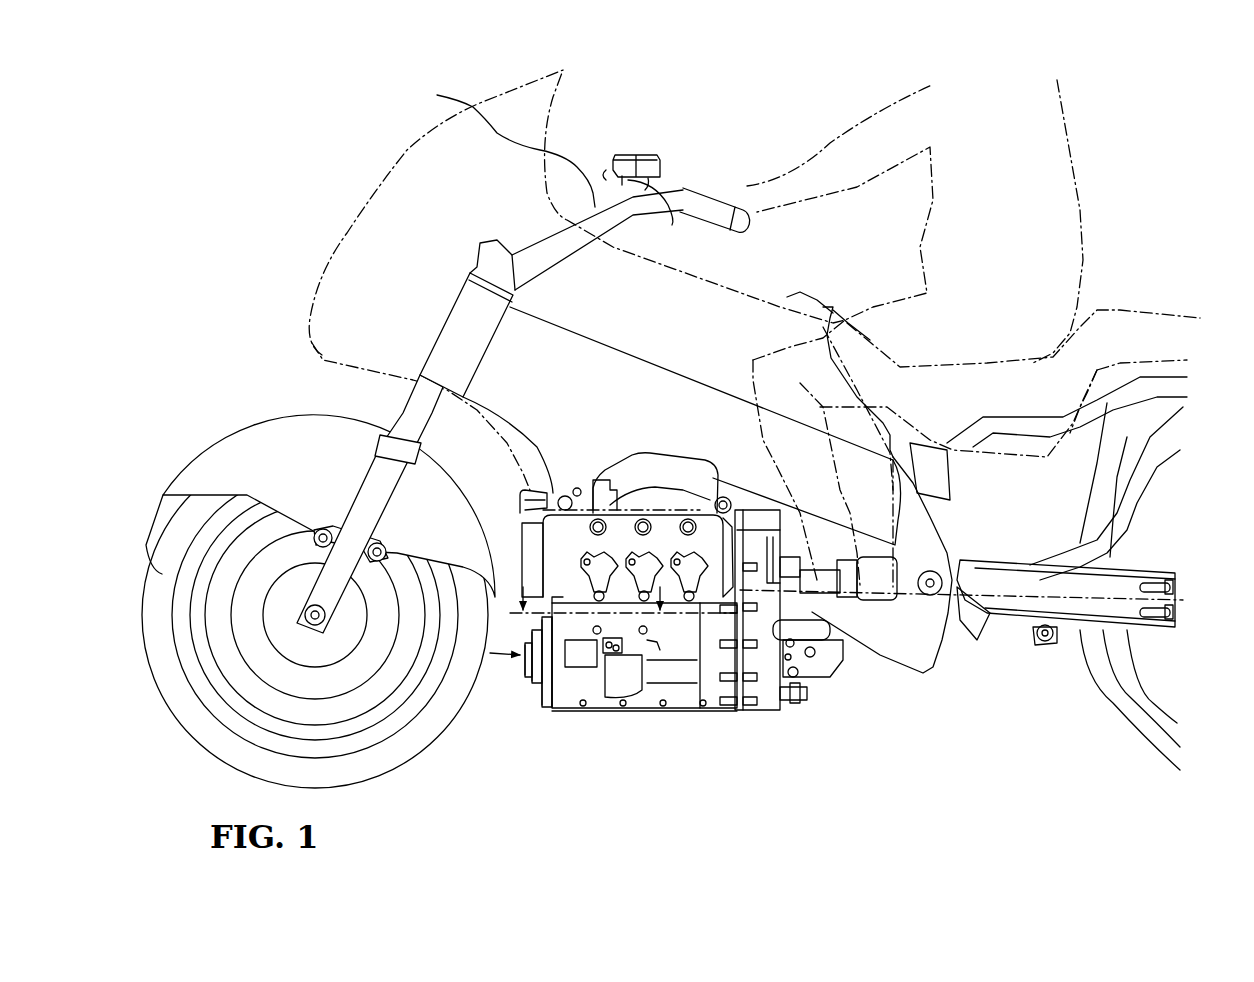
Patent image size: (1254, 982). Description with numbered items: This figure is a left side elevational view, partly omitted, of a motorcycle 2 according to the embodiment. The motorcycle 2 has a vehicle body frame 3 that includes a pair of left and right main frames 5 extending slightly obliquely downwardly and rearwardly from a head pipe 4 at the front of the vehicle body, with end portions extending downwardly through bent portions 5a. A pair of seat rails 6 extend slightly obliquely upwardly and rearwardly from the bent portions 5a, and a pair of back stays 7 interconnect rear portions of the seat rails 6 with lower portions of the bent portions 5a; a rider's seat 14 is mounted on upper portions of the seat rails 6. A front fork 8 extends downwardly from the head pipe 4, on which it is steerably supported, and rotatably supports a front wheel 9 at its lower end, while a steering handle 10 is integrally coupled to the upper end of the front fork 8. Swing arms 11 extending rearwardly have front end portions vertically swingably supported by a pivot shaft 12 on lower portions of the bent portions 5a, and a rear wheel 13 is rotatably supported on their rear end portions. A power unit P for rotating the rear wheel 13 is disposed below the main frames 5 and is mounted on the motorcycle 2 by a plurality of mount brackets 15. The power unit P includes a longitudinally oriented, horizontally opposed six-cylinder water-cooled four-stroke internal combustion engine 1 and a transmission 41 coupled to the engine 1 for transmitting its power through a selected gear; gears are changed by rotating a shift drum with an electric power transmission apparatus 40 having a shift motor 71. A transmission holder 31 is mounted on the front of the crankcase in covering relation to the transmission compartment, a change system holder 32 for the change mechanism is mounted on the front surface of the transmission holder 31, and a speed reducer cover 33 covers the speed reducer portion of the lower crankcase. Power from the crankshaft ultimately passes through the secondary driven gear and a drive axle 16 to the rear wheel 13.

The internal combustion engine 1 is at (661, 614).
The motorcycle 2 is at (300, 306).
The vehicle body frame 3 is at (455, 273).
The head pipe 4 is at (458, 332).
The main frames 5 is at (578, 380).
The bent portions 5a is at (913, 517).
The seat rails 6 is at (1018, 427).
The back stays 7 is at (1075, 552).
The front fork 8 is at (403, 413).
The front wheel 9 is at (149, 540).
The steering handle 10 is at (496, 141).
The swing arms 11 is at (1037, 600).
The pivot shaft 12 is at (930, 595).
The rear wheel 13 is at (1098, 660).
The rider's seat 14 is at (1092, 353).
The mount brackets 15 is at (710, 500).
The drive axle 16 is at (830, 583).
The transmission holder 31 is at (557, 708).
The change system holder 32 is at (545, 703).
The speed reducer cover 33 is at (530, 682).
The electric power transmission apparatus 40 is at (520, 667).
The transmission 41 is at (657, 642).
The shift motor 71 is at (580, 658).
The power unit P is at (797, 712).